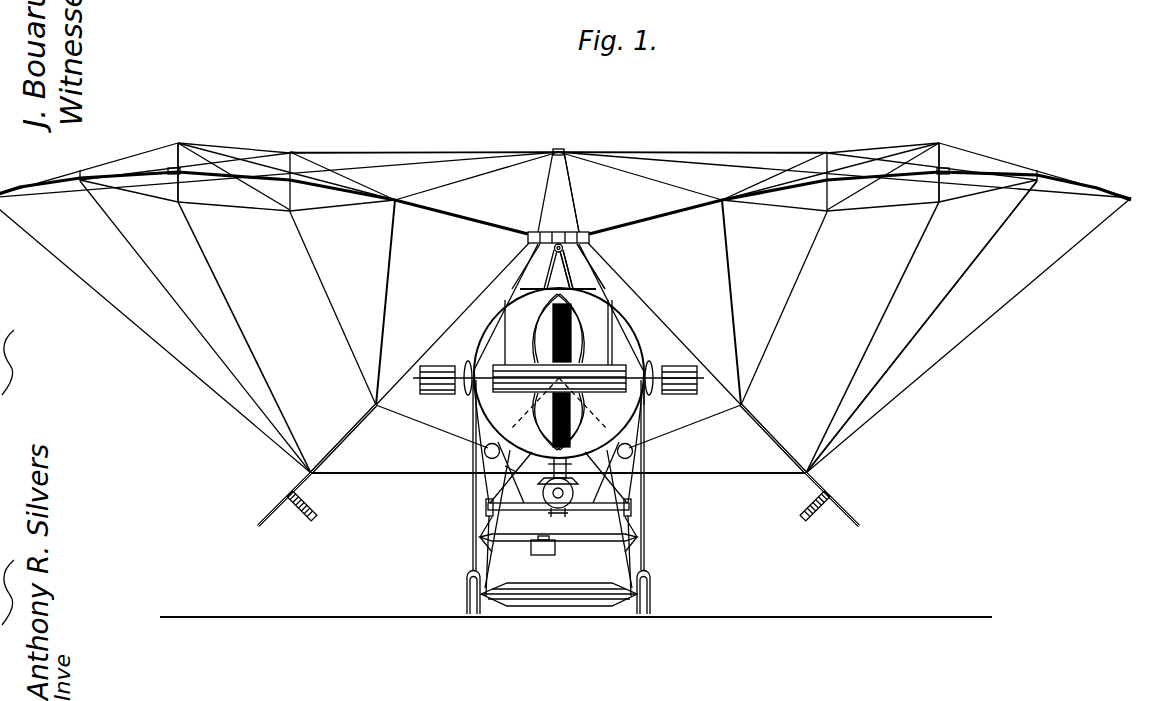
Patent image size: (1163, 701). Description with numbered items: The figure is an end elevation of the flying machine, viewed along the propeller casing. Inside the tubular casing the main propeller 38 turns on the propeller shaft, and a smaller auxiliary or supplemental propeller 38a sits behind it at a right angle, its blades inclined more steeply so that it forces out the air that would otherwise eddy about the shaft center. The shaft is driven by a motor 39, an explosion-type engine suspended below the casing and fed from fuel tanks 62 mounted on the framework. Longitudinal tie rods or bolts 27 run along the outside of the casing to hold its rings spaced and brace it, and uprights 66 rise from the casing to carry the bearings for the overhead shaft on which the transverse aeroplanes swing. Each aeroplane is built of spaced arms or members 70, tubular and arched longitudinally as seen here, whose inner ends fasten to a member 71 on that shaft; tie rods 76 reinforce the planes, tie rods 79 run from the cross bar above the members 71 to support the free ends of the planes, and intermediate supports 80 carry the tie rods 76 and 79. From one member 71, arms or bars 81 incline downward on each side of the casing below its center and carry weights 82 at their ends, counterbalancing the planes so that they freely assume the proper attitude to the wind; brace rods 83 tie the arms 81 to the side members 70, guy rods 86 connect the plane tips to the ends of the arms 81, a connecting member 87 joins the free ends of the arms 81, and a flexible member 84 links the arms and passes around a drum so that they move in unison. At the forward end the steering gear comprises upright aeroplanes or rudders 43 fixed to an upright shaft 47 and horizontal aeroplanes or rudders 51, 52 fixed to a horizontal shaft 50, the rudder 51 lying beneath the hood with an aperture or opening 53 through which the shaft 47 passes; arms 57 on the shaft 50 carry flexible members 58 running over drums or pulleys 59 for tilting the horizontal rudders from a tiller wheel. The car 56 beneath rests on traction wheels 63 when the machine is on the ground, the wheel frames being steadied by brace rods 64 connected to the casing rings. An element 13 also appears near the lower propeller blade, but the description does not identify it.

The intermediate supports 80 is at (182, 165).
The tie rods 76 is at (322, 170).
The tie rods 79 is at (418, 152).
The arms or members 70 is at (466, 220).
The member 71 is at (590, 238).
The uprights 66 is at (584, 246).
The tie rods or bolts 27 is at (528, 266).
The upright shaft 47 is at (608, 302).
The propeller 38 is at (520, 291).
The upright aeroplanes or rudders 43 is at (565, 333).
The horizontal aeroplane or rudder 51 is at (650, 360).
The arms 57 is at (467, 360).
The arms or bars 81 is at (440, 340).
The aeroplanes or rudders 52 is at (441, 392).
The auxiliary or supplemental propeller 38a is at (559, 363).
The horizontal shaft 50 is at (630, 398).
The lower blade 13 is at (568, 428).
The tanks 62 is at (485, 449).
The flexible member 84 is at (731, 412).
The brace rods 83 is at (389, 266).
The guy rods 86 is at (228, 302).
The aperture or opening 53 is at (508, 470).
The flexible members 58 is at (482, 487).
The drums or pulleys 59 is at (486, 509).
The brace rods 64 is at (473, 548).
The traction wheels 63 is at (470, 608).
The motor 39 is at (566, 510).
The car 56 is at (580, 596).
The connecting member 87 is at (354, 472).
The weights 82 is at (292, 511).